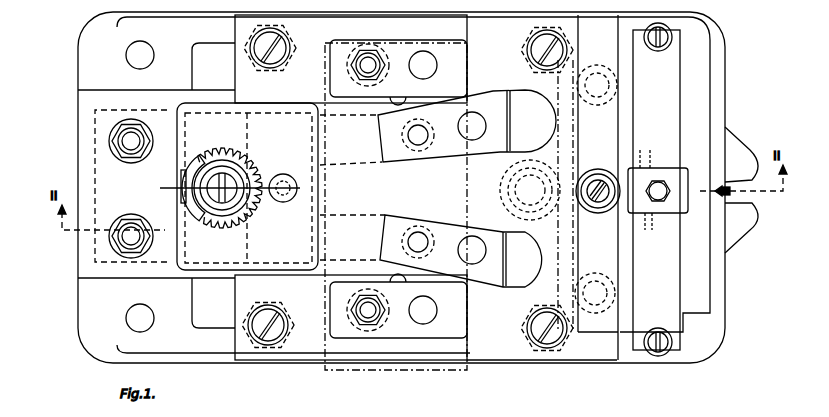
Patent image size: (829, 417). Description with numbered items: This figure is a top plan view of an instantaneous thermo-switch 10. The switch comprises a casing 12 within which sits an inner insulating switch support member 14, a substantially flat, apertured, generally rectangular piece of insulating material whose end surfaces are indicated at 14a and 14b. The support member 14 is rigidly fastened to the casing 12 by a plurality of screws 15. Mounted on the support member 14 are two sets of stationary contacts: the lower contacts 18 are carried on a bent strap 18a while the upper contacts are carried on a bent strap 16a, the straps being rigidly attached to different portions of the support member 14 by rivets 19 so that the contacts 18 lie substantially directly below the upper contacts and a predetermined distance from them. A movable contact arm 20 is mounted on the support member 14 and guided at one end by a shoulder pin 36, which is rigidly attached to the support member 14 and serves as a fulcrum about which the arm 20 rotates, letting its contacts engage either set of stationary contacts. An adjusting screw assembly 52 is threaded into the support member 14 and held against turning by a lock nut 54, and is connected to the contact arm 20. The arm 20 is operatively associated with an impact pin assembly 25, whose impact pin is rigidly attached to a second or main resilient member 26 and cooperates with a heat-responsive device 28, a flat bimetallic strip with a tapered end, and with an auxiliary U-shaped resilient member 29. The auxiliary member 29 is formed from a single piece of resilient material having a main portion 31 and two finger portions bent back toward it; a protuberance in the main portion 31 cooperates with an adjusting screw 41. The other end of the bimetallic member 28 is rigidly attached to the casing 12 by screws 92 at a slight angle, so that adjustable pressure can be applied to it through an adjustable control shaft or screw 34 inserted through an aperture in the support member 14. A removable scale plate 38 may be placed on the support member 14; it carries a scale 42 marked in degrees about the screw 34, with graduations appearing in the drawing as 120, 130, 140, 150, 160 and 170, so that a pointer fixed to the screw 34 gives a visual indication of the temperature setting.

The instantaneous thermo-switch 10 is at (66, 123).
The casing 12 is at (88, 31).
The inner insulating switch support member 14 is at (240, 68).
The end surface 14a is at (175, 118).
The end surface 14b is at (618, 308).
The screws 15 is at (288, 44).
The bent strap 16a is at (400, 157).
The stationary contacts 18 is at (651, 48).
The bent strap 18a is at (448, 327).
The rivets 19 is at (431, 71).
The movable contact arm 20 is at (623, 123).
The impact pin assembly 25 is at (640, 240).
The main resilient member 26 is at (673, 85).
The heat-responsive device 28 is at (662, 348).
The auxiliary U-shaped resilient member 29 is at (692, 145).
The main portion 31 is at (197, 163).
The adjustable control shaft or screw 34 is at (221, 186).
The shoulder pin 36 is at (314, 184).
The removable scale plate 38 is at (315, 140).
The adjusting screw 41 is at (742, 200).
The scale 42 is at (266, 143).
The adjusting screw assembly 52 is at (594, 212).
The lock nut 54 is at (594, 172).
The screws 92 is at (109, 141).
The gear position 120 is at (196, 137).
The gear position 130 is at (245, 135).
The gear position 140 is at (276, 157).
The gear position 150 is at (276, 222).
The gear position 160 is at (215, 258).
The gear position 170 is at (196, 244).